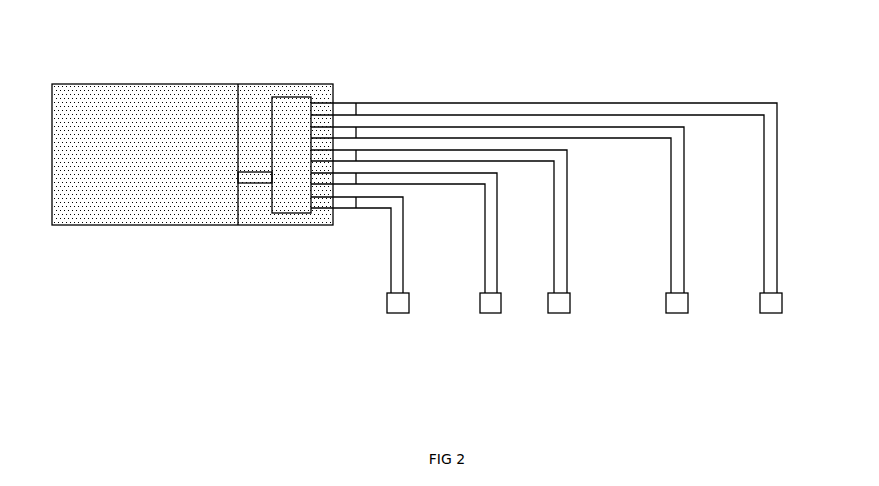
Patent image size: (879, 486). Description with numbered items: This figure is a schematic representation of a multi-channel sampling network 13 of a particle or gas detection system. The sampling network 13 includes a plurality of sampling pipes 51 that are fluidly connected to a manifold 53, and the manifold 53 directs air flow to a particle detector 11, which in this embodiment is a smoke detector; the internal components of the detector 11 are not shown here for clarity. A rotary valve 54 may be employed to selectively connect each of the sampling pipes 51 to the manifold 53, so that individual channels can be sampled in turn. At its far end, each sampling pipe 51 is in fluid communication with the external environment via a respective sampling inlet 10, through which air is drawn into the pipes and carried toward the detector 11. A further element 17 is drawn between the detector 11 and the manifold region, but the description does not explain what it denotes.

The particle detector 11 is at (192, 154).
The manifold 53 is at (283, 84).
The rotary valve 54 is at (290, 213).
The interconnect 17 is at (238, 178).
The sampling network 13 is at (540, 218).
The sampling pipes 51 is at (390, 272).
The sampling inlets 10 is at (392, 305).